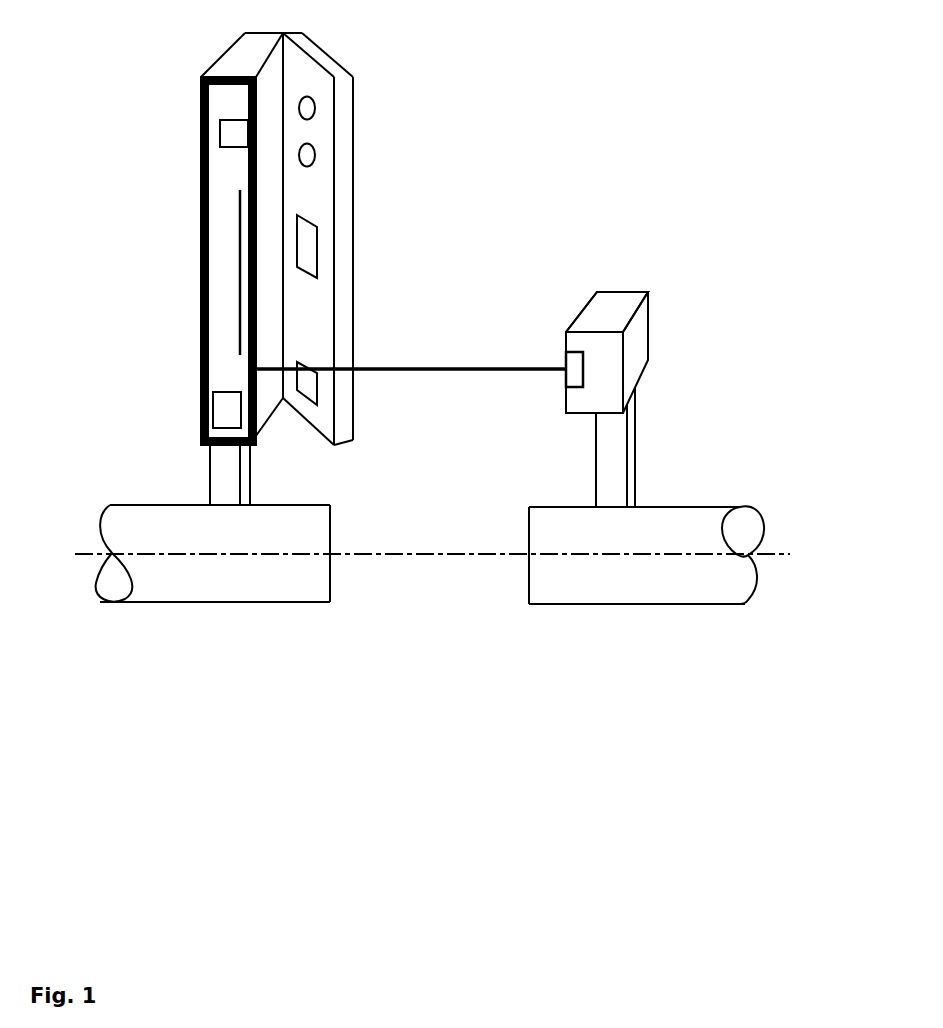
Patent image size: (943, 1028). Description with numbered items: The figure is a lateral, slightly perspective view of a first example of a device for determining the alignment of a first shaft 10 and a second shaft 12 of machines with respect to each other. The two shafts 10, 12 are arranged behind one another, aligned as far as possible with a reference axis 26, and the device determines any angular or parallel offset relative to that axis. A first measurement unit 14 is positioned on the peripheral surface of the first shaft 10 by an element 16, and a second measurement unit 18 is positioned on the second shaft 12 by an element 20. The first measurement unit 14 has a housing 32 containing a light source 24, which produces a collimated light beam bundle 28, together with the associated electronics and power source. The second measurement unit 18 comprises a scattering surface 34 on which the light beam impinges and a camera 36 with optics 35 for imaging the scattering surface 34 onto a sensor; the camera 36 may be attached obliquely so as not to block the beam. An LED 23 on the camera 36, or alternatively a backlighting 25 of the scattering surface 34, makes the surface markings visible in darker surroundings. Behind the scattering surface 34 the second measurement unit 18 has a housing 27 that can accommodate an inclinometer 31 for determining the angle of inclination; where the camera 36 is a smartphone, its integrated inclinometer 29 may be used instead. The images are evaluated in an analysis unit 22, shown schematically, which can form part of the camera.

The first shaft 10 is at (697, 583).
The second shaft 12 is at (175, 580).
The first measurement unit 14 is at (698, 345).
The positioning element 16 is at (612, 447).
The second measurement unit 18 is at (168, 354).
The positioning element 20 is at (222, 476).
The analysis unit 22 is at (310, 248).
The LED 23 is at (312, 150).
The light source 24 is at (575, 367).
The backlighting 25 is at (243, 263).
The reference axis 26 is at (417, 555).
The housing 27 is at (222, 417).
The light beam bundle 28 is at (512, 370).
The inclinometer 29 is at (310, 387).
The inclinometer 31 is at (213, 132).
The housing 32 is at (205, 322).
The scattering surface 34 is at (267, 233).
The optics 35 is at (313, 105).
The camera 36 is at (320, 128).